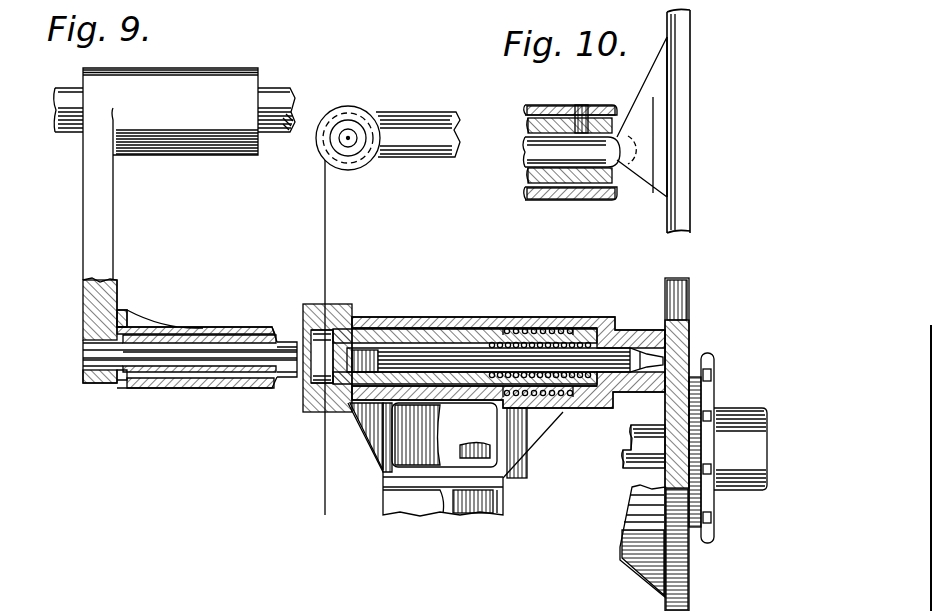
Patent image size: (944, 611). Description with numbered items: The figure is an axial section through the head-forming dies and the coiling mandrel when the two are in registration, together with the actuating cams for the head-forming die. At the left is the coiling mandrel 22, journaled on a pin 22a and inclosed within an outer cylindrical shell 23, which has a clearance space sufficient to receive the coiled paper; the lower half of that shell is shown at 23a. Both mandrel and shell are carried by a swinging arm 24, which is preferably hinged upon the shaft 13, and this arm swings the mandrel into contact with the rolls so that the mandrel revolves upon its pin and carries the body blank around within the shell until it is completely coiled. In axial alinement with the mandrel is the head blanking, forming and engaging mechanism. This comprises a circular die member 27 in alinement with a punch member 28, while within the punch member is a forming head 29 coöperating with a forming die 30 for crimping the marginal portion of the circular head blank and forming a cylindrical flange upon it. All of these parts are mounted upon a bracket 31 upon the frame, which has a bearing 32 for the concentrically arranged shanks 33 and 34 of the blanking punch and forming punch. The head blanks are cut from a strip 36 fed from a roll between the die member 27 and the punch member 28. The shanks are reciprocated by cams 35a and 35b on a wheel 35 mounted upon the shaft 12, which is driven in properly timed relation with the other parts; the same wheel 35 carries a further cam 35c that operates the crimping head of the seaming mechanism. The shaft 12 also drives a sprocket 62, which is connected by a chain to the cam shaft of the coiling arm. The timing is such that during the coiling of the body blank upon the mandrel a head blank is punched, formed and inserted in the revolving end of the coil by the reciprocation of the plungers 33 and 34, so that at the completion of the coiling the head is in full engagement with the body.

In FIG. 9, the shaft 12 is at (623, 460).
In FIG. 9, the shaft 13 is at (283, 93).
In FIG. 9, the coiling mandrel 22 is at (233, 330).
In FIG. 9, the pin 22a is at (82, 358).
In FIG. 9, the outer cylindrical shell 23 is at (193, 327).
In FIG. 9, the sleeve lower part 23a is at (165, 383).
In FIG. 9, the swinging arm 24 is at (107, 238).
In FIG. 9, the circular die member 27 is at (317, 304).
In FIG. 9, the punch member 28 is at (387, 318).
In FIG. 9, the forming head 29 is at (370, 310).
In FIG. 9, the forming die 30 is at (305, 318).
In FIG. 9, the bracket 31 is at (387, 443).
In FIG. 9, the bearing 32 is at (450, 317).
In FIG. 10, the bearing 32 is at (555, 200).
In FIG. 9, the shank 33 is at (497, 327).
In FIG. 10, the shank 33 is at (528, 182).
In FIG. 9, the shank 34 is at (552, 327).
In FIG. 10, the shank 34 is at (528, 147).
In FIG. 9, the wheel 35 is at (687, 580).
In FIG. 10, the wheel 35 is at (683, 115).
In FIG. 10, the cam 35a is at (663, 75).
In FIG. 10, the cam 35b is at (643, 107).
In FIG. 9, the cam 35c is at (627, 532).
In FIG. 9, the strip 36 is at (329, 210).
In FIG. 9, the sprocket 62 is at (717, 367).